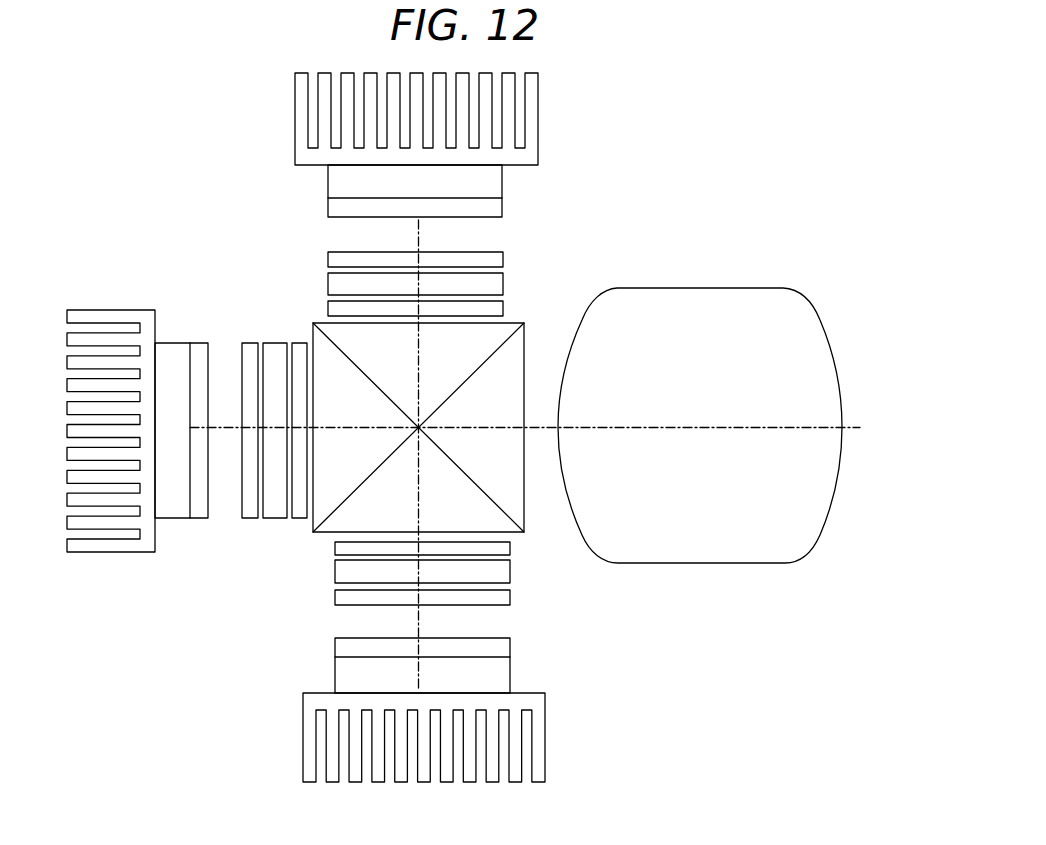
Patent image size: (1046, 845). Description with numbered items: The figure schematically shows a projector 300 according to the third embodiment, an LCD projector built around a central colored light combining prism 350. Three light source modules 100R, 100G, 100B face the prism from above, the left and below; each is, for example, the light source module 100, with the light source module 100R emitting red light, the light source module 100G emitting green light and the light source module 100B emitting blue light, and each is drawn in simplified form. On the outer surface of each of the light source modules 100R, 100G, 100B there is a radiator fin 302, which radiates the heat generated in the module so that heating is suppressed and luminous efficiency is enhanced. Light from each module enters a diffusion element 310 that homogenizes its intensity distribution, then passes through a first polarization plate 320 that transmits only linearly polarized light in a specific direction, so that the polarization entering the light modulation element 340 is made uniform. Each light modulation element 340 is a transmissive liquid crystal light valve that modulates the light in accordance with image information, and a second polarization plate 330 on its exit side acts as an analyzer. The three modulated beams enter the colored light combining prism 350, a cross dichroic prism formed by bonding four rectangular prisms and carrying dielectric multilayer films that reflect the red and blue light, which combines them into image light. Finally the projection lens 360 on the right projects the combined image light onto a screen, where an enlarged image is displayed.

The projector 300 is at (757, 198).
The radiator fin 302 is at (519, 157).
The light source module 100 is at (383, 428).
The light source module 100R is at (473, 185).
The light source module 100G is at (173, 355).
The light source module 100B is at (490, 677).
The diffusion element 310 is at (488, 209).
The first polarization plate 320 is at (490, 259).
The second polarization plate 330 is at (495, 308).
The light modulation element 340 is at (488, 285).
The colored light combining prism 350 is at (332, 495).
The projection lens 360 is at (683, 322).